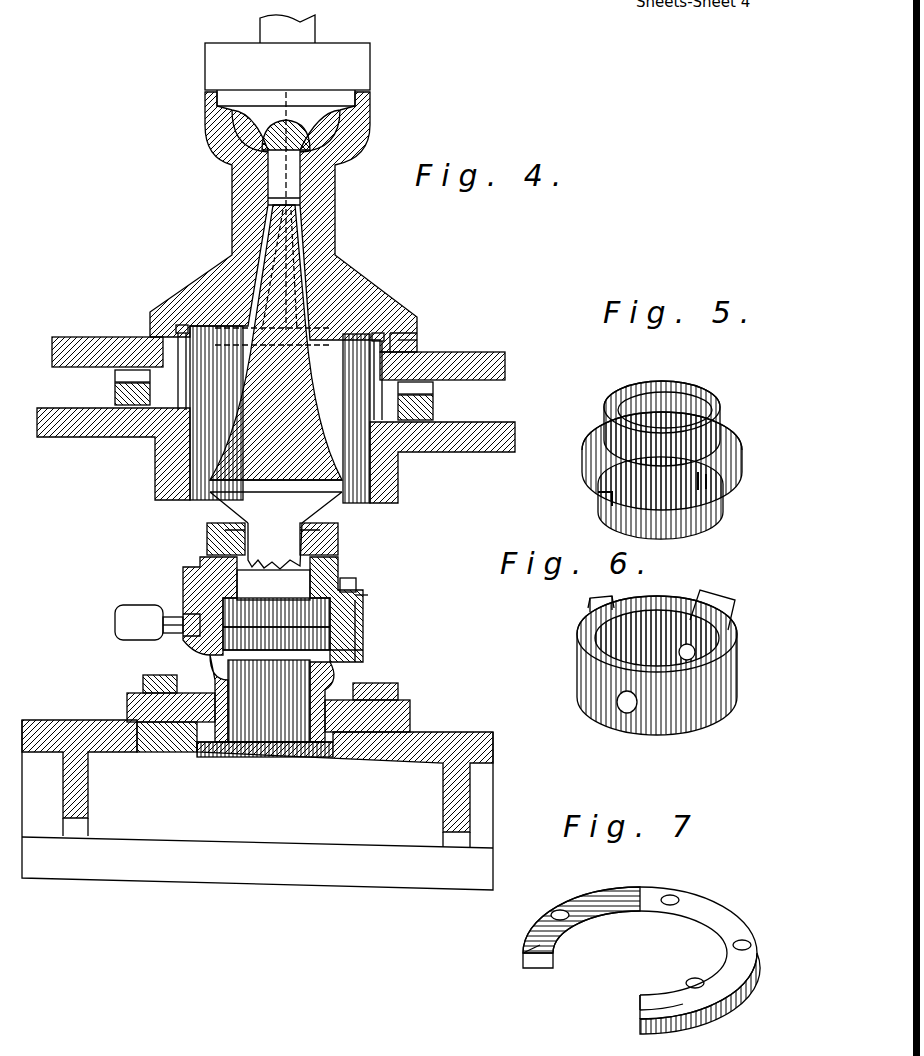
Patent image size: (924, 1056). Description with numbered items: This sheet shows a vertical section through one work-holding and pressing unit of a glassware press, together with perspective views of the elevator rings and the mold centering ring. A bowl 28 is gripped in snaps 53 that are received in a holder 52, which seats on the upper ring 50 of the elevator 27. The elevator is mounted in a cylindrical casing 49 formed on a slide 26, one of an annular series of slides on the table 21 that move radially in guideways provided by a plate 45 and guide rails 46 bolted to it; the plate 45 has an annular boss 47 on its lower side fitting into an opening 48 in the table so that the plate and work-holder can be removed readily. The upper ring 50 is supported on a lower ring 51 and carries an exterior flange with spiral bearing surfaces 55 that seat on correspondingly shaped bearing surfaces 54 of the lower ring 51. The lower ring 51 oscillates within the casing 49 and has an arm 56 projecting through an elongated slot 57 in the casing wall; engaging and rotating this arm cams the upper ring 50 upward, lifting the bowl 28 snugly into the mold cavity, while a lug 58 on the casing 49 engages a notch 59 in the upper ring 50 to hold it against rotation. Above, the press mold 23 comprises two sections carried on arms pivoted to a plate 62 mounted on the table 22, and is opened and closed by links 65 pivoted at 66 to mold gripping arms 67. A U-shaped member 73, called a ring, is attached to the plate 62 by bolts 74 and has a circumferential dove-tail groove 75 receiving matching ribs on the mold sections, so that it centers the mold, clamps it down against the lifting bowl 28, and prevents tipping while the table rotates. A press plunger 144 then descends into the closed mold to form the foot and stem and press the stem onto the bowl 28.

In FIG. 4, the press plunger 144 is at (362, 65).
In FIG. 4, the press mold 23 is at (232, 172).
In FIG. 4, the bowl 28 is at (297, 283).
In FIG. 4, the bolts 74 is at (181, 325).
In FIG. 4, the U-shaped member 73 is at (390, 333).
In FIG. 7, the U-shaped member 73 is at (615, 935).
In FIG. 4, the dove-tail groove 75 is at (405, 340).
In FIG. 7, the dove-tail groove 75 is at (530, 950).
In FIG. 4, the plate 62 is at (66, 346).
In FIG. 4, the pivots 66 is at (133, 370).
In FIG. 4, the links 65 is at (115, 377).
In FIG. 4, the mold gripping arms 67 is at (115, 392).
In FIG. 4, the table 22 is at (506, 435).
In FIG. 4, the snaps 53 is at (340, 522).
In FIG. 4, the holder 52 is at (338, 537).
In FIG. 4, the upper ring 50 is at (340, 553).
In FIG. 5, the upper ring 50 is at (742, 428).
In FIG. 4, the lug 58 is at (362, 579).
In FIG. 4, the elevator 27 is at (393, 586).
In FIG. 4, the cylindrical casing 49 is at (363, 604).
In FIG. 4, the lower ring 51 is at (363, 613).
In FIG. 6, the lower ring 51 is at (580, 660).
In FIG. 4, the arm 56 is at (141, 616).
In FIG. 4, the elongated slot 57 is at (186, 640).
In FIG. 4, the slide 26 is at (363, 686).
In FIG. 4, the guide rails 46 is at (400, 690).
In FIG. 4, the plate 45 is at (410, 713).
In FIG. 4, the annular boss 47 is at (200, 760).
In FIG. 4, the opening 48 is at (322, 765).
In FIG. 4, the table 21 is at (440, 748).
In FIG. 5, the spiral bearing surfaces 55 is at (606, 498).
In FIG. 5, the notch 59 is at (708, 486).
In FIG. 6, the bearing surfaces 54 is at (650, 602).